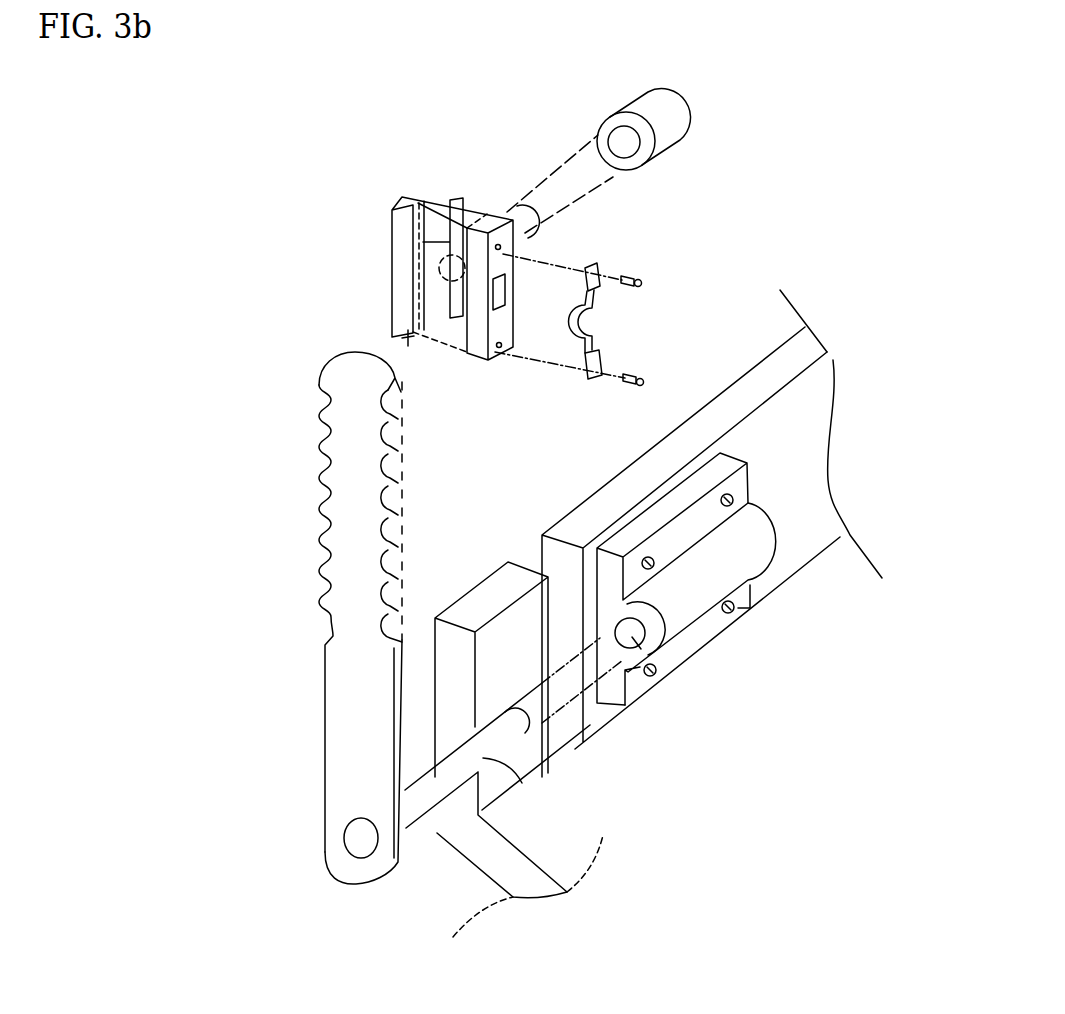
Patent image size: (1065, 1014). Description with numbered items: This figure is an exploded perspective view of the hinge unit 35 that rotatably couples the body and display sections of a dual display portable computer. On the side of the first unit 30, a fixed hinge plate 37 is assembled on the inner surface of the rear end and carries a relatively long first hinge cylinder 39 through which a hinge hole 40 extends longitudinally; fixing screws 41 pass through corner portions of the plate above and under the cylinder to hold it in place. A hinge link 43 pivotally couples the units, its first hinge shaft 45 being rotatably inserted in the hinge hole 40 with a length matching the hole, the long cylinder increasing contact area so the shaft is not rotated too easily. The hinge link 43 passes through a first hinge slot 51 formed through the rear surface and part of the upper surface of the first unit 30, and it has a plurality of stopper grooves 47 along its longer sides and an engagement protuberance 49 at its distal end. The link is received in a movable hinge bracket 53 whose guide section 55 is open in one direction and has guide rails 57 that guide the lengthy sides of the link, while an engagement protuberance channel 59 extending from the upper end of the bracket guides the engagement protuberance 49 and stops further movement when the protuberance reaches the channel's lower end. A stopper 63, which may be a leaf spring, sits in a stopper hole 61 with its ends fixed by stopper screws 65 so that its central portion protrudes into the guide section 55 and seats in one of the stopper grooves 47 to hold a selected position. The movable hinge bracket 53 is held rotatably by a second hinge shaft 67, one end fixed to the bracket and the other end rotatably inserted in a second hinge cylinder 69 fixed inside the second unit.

The first unit 30 is at (787, 377).
The hinge unit 35 is at (288, 604).
The fixed hinge plate 37 is at (693, 643).
The first hinge cylinder 39 is at (770, 527).
The hinge hole 40 is at (645, 700).
The fixing screws 41 is at (752, 608).
The hinge link 43 is at (340, 742).
The first hinge shaft 45 is at (512, 758).
The stopper grooves 47 is at (398, 458).
The engagement protuberance 49 is at (368, 360).
The first hinge slot 51 is at (541, 572).
The movable hinge bracket 53 is at (391, 231).
The guide section 55 is at (443, 258).
The guide rails 57 is at (408, 345).
The engagement protuberance channel 59 is at (440, 193).
The stopper hole 61 is at (500, 276).
The stopper 63 is at (612, 320).
The stopper screws 65 is at (637, 279).
The second hinge shaft 67 is at (520, 212).
The second hinge cylinder 69 is at (677, 110).